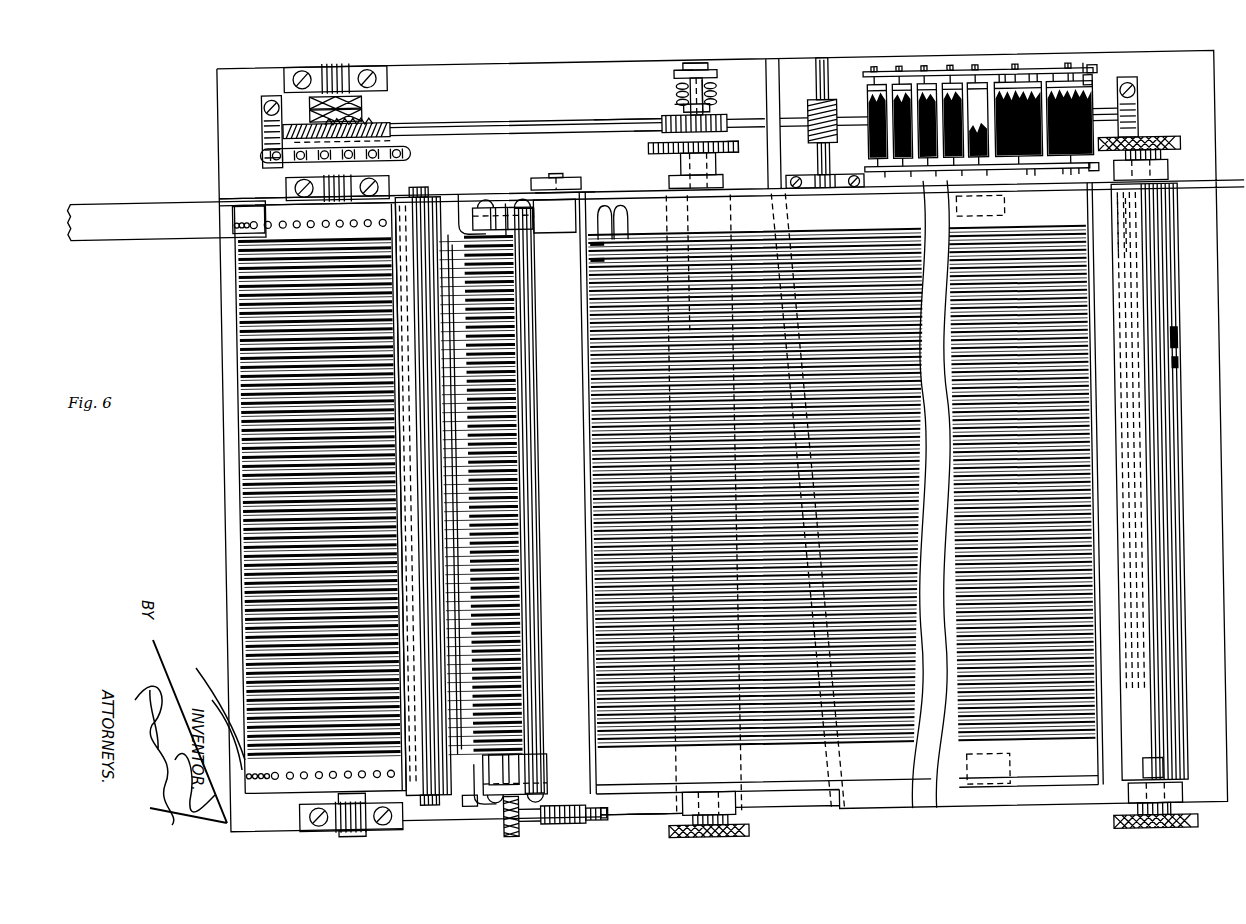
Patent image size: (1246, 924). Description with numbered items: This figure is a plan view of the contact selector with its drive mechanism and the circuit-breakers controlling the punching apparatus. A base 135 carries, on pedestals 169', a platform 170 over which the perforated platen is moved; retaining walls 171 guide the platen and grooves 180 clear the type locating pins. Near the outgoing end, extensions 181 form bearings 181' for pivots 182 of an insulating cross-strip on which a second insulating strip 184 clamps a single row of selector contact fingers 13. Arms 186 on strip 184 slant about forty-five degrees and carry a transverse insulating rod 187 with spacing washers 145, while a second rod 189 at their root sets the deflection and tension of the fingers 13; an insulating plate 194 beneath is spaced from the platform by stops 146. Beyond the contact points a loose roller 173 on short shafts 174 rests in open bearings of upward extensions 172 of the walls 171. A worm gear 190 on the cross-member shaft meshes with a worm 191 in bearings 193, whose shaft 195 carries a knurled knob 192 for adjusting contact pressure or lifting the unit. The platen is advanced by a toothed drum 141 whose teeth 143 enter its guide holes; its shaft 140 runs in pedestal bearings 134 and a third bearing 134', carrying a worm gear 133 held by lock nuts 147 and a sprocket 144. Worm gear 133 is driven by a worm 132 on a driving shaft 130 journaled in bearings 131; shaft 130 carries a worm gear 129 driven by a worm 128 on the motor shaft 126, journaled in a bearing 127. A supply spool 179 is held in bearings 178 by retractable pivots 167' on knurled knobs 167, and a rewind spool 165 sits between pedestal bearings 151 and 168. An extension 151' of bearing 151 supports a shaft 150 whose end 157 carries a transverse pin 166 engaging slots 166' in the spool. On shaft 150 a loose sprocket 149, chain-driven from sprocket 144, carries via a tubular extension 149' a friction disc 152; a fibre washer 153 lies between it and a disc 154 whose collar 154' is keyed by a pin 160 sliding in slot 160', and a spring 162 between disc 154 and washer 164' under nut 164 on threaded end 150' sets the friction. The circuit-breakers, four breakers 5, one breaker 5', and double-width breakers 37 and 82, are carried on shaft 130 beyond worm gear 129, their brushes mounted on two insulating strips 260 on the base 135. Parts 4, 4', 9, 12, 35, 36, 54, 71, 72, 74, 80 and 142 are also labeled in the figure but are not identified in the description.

The upper rail 4 is at (967, 67).
The rail member 4' is at (998, 66).
The circuit-breaker 5 is at (967, 124).
The circuit-breaker 5' is at (1012, 66).
The lower rail 9 is at (870, 171).
The guide loops 12 is at (606, 231).
The selector contact fingers 13 is at (505, 330).
The pin 35 is at (1031, 65).
The pin 36 is at (1059, 64).
The circuit-breaker 37 is at (1045, 64).
The pin 54 is at (971, 66).
The pin 71 is at (1094, 58).
The pin 72 is at (1079, 64).
The foot 74 is at (1080, 175).
The foot 80 is at (1046, 175).
The circuit-breaker 82 is at (1103, 96).
The motor shaft 126 is at (823, 75).
The bearing 127 is at (818, 178).
The worm 128 is at (820, 140).
The worm gear 129 is at (823, 95).
The driving shaft 130 is at (505, 117).
The bearings 131 is at (268, 106).
The worm 132 is at (354, 145).
The worm gear 133 is at (420, 117).
The pedestal bearings 134 is at (319, 503).
The third bearing 134' is at (360, 78).
The base 135 is at (230, 150).
The drum shaft 140 is at (340, 824).
The toothed drum 141 is at (239, 227).
The tape panel 142 is at (242, 267).
The teeth 143 is at (238, 217).
The sprocket 144 is at (418, 149).
The insulating washers 145 is at (490, 781).
The stops 146 is at (456, 228).
The lock nuts 147 is at (372, 110).
The sprocket 149 is at (682, 153).
The tubular extension 149' is at (752, 140).
The shaft 150 is at (671, 97).
The threaded portion 150' is at (643, 68).
The pedestal bearing 151 is at (713, 177).
The outward extension 151' is at (719, 169).
The friction disc 152 is at (668, 130).
The friction washer 153 is at (640, 118).
The disc 154 is at (625, 110).
The collar 154' is at (675, 97).
The shaft end 157 is at (709, 503).
The pin 160 is at (721, 106).
The slot 160' is at (653, 101).
The spring 162 is at (712, 98).
The nut 164 is at (716, 70).
The washer 164' is at (666, 69).
The second spool 165 is at (640, 813).
The transverse pin 166 is at (787, 501).
The slots 166' is at (670, 504).
The knurled knobs 167 is at (942, 476).
The retractable pivots 167' is at (980, 489).
The pedestal bearing 168 is at (740, 812).
The pedestals 169' is at (1017, 489).
The platform 170 is at (882, 790).
The retaining walls 171 is at (862, 190).
The upward extensions 172 is at (398, 196).
The roller 173 is at (410, 192).
The short projecting shafts 174 is at (430, 182).
The bearings 178 is at (1173, 178).
The spool 179 is at (1180, 348).
The grooves 180 is at (1150, 282).
The extension 181 is at (590, 486).
The bearings 181' is at (576, 470).
The pivots 182 is at (560, 172).
The second insulating strip 184 is at (545, 780).
The arms 186 is at (495, 204).
The transverse rod 187 is at (466, 195).
The second rod 189 is at (513, 200).
The worm gear 190 is at (598, 818).
The worm 191 is at (585, 820).
The knurled knob 192 is at (504, 833).
The bearings 193 is at (640, 815).
The insulating plate 194 is at (460, 802).
The worm shaft 195 is at (542, 822).
The insulating strips 260 is at (1105, 72).